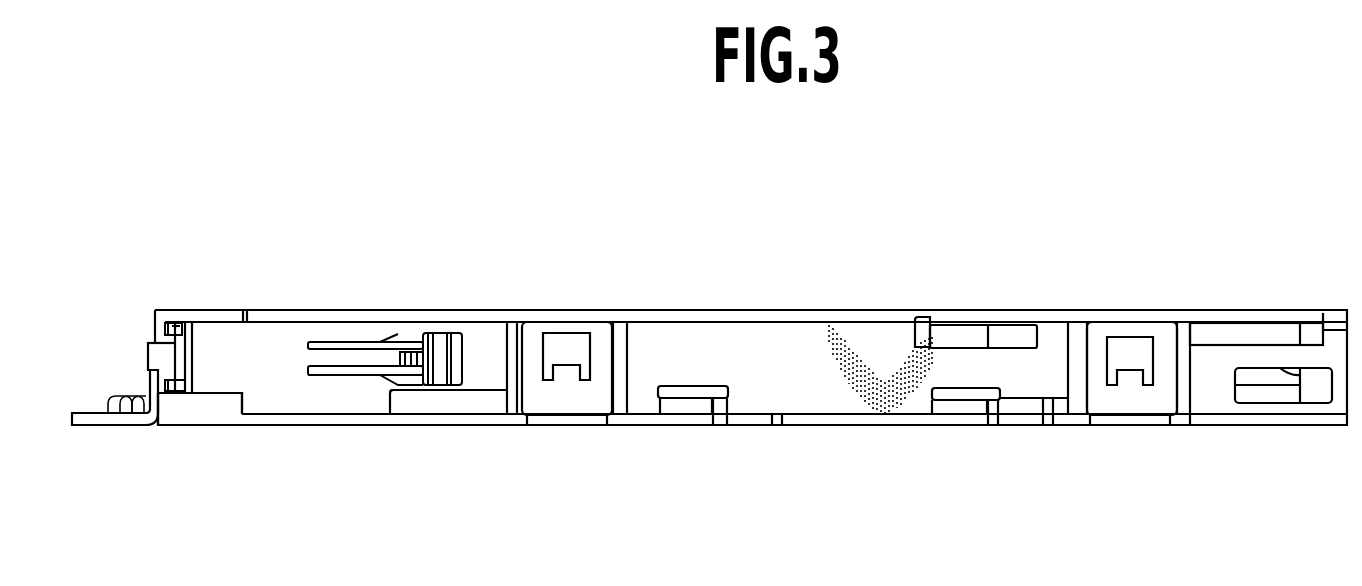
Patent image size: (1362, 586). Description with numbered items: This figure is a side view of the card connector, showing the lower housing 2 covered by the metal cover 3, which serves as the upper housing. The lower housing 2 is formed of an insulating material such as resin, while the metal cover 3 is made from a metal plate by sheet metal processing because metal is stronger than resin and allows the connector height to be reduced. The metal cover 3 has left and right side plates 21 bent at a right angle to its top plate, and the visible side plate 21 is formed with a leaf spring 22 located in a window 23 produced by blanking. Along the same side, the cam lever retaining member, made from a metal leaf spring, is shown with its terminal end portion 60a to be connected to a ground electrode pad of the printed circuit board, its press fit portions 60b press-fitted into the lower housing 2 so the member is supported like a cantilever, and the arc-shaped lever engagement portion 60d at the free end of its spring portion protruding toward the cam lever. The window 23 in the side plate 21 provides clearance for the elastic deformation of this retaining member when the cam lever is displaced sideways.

The lower housing 2 is at (193, 426).
The metal cover 3 is at (836, 377).
The side plate 21 is at (780, 342).
The leaf spring 22 is at (382, 348).
The window 23 is at (375, 388).
The terminal end portion 60a is at (115, 427).
The press fit portion 60b is at (182, 328).
The lever engagement portion 60d is at (441, 340).